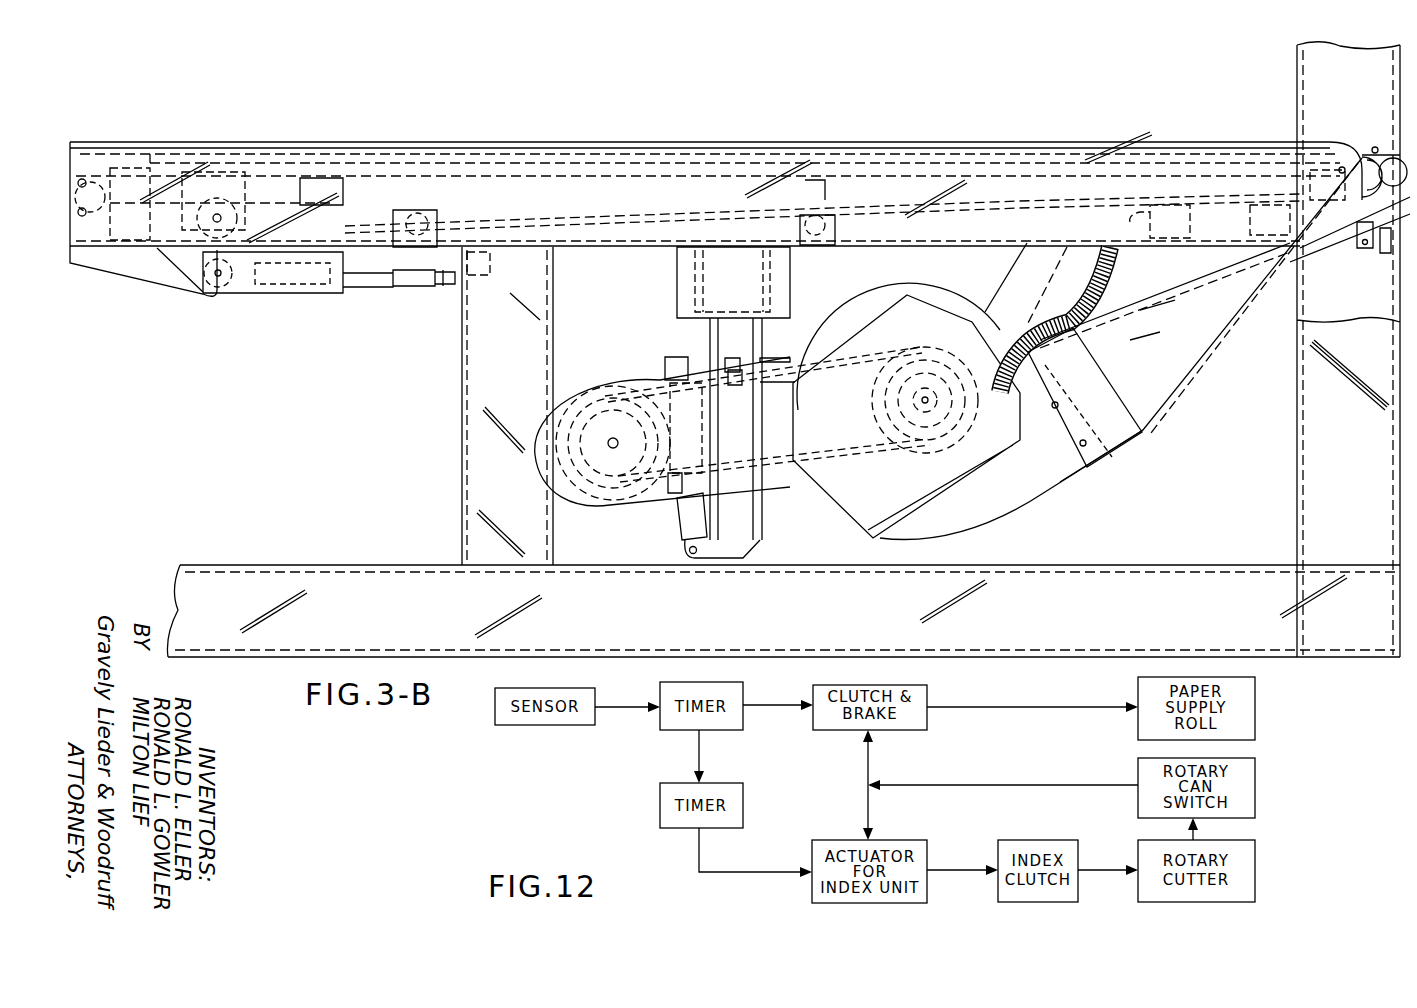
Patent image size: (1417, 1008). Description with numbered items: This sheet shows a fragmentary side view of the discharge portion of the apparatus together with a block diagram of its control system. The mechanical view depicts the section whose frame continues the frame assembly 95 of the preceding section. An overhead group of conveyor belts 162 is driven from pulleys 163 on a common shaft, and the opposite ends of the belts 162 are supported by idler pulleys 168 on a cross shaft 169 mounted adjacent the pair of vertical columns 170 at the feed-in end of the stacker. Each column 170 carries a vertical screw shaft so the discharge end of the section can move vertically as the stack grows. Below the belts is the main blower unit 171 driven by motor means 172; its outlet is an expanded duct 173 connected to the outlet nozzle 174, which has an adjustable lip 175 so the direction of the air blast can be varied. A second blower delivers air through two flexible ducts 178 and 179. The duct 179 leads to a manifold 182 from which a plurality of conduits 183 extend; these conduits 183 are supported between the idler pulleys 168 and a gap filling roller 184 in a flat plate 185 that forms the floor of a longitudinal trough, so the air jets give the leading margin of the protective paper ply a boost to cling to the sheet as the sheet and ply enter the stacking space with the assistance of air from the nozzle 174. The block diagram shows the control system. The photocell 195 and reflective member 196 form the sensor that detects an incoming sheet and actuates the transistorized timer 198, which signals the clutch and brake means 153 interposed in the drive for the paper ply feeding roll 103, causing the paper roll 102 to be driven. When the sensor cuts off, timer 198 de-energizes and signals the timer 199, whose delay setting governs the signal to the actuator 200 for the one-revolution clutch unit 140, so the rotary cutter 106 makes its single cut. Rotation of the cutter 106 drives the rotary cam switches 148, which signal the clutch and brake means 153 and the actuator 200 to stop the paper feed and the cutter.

In FIG. 3B, the overhead conveyor belts 162 is at (502, 143).
In FIG. 3B, the drive pulleys 163 is at (100, 147).
In FIG. 3B, the frame assembly 95 is at (625, 240).
In FIG. 3B, the vertical columns 170 is at (1360, 75).
In FIG. 3B, the cross shaft 169 is at (1340, 168).
In FIG. 3B, the idler pulleys 168 is at (1335, 150).
In FIG. 3B, the flat plate 185 is at (1385, 140).
In FIG. 3B, the manifold 182 is at (1125, 212).
In FIG. 3B, the flexible duct 179 is at (1095, 285).
In FIG. 3B, the conduits 183 is at (1215, 258).
In FIG. 3B, the gap filling roller 184 is at (1350, 229).
In FIG. 3B, the outlet nozzle 174 is at (1350, 248).
In FIG. 3B, the adjustable lip 175 is at (1387, 258).
In FIG. 3B, the flexible duct 178 is at (1045, 385).
In FIG. 3B, the expanded duct 173 is at (1175, 395).
In FIG. 3B, the motor means 172 is at (577, 393).
In FIG. 3B, the main blower unit 171 is at (1003, 515).
In FIG. 12, the photocell 195 is at (545, 722).
In FIG. 12, the reflective member 196 is at (500, 722).
In FIG. 12, the transistorized timer 198 is at (733, 728).
In FIG. 12, the timer 199 is at (660, 800).
In FIG. 12, the clutch and brake means 153 is at (905, 730).
In FIG. 12, the actuator 200 is at (905, 840).
In FIG. 12, the one-revolution clutch unit 140 is at (1040, 840).
In FIG. 12, the paper roll 102 is at (1248, 708).
In FIG. 12, the paper ply feeding roll 103 is at (1255, 715).
In FIG. 12, the rotary cam switches 148 is at (1255, 782).
In FIG. 12, the rotary cutter 106 is at (1255, 860).